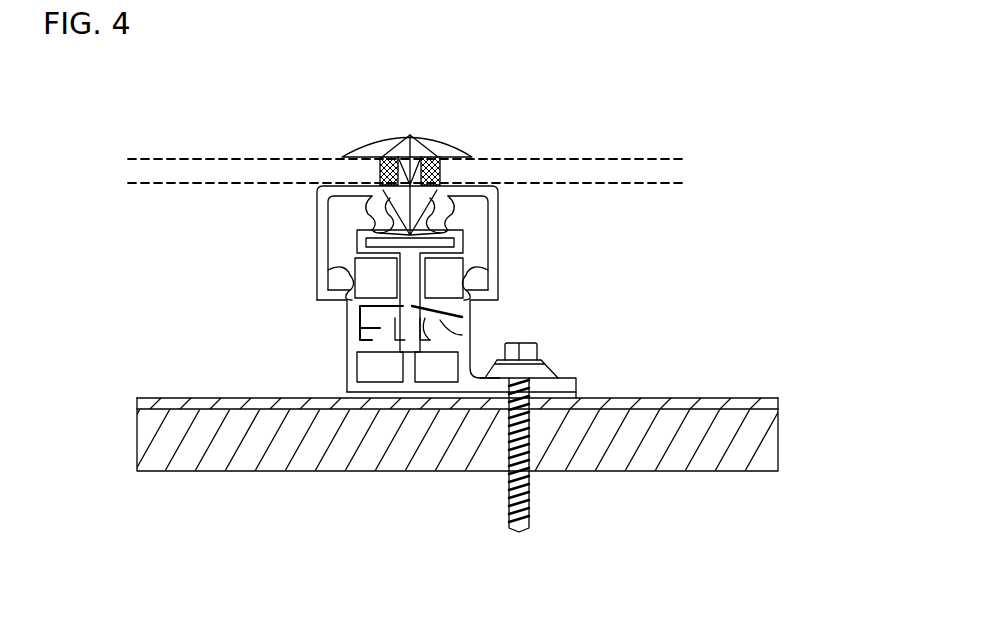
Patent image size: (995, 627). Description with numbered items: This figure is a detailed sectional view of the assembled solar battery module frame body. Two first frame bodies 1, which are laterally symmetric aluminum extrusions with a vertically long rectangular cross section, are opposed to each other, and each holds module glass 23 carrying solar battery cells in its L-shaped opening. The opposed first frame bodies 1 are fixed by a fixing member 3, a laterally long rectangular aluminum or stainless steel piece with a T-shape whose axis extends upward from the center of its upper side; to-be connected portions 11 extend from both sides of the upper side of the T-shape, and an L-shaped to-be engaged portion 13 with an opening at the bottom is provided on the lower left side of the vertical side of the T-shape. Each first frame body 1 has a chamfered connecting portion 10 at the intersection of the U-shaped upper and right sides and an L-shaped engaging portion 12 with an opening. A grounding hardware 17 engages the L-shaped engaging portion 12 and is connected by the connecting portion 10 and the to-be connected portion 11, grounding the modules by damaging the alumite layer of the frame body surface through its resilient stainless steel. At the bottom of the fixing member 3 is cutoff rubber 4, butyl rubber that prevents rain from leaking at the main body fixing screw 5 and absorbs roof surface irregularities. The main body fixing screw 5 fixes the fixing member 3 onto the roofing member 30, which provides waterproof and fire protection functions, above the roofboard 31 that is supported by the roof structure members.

The first frame body 1 is at (380, 147).
The fixing member 3 is at (565, 378).
The cutoff rubber 4 is at (352, 387).
The main body fixing screw 5 is at (530, 352).
The connecting portion 10 is at (365, 268).
The to-be connected portion 11 is at (365, 225).
The L-shaped engaging portion 12 is at (362, 358).
The L-shaped to-be engaged portion 13 is at (350, 316).
The grounding hardware 17 is at (467, 327).
The module glass 23 is at (222, 175).
The roofing member 30 is at (203, 398).
The roofboard 31 is at (254, 457).